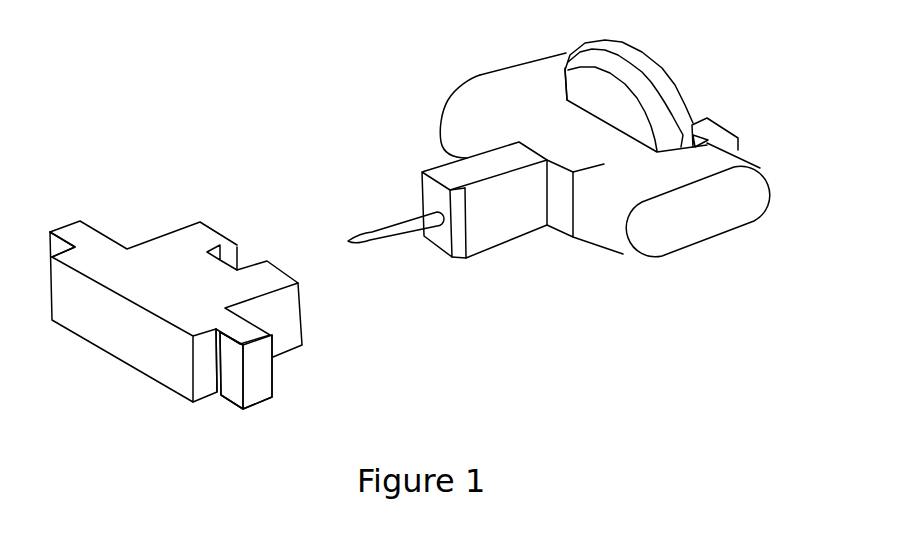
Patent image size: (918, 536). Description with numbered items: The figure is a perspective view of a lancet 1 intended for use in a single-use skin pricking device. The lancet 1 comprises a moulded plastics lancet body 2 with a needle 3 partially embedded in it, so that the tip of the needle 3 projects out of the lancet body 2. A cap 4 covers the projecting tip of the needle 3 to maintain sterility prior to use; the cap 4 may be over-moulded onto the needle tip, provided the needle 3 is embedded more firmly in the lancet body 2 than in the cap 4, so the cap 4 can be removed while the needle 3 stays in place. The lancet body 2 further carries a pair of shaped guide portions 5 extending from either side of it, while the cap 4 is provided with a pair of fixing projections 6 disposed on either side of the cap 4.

The lancet 1 is at (298, 70).
The lancet body 2 is at (592, 143).
The needle 3 is at (363, 233).
The cap 4 is at (163, 263).
The shaped guide portions 5 is at (700, 220).
The fixing projections 6 is at (70, 223).